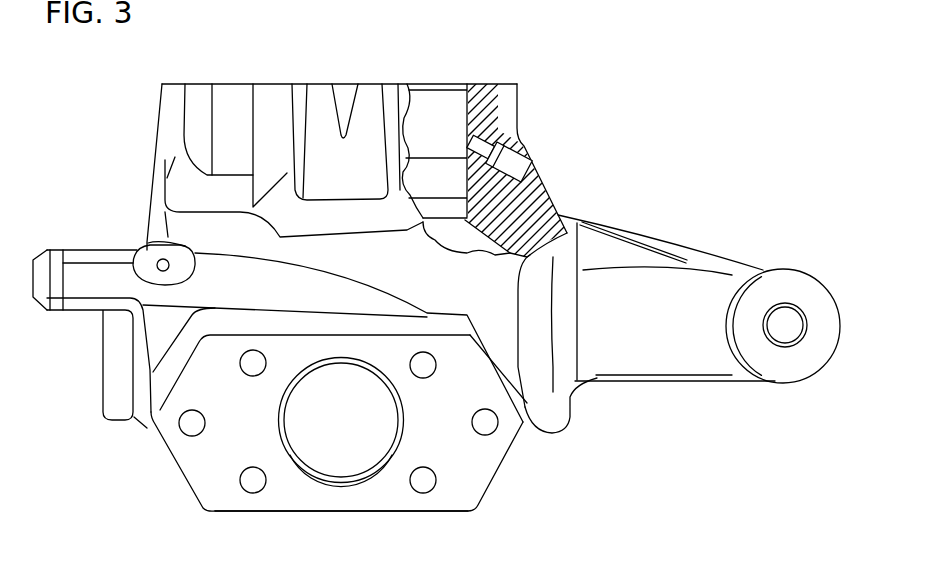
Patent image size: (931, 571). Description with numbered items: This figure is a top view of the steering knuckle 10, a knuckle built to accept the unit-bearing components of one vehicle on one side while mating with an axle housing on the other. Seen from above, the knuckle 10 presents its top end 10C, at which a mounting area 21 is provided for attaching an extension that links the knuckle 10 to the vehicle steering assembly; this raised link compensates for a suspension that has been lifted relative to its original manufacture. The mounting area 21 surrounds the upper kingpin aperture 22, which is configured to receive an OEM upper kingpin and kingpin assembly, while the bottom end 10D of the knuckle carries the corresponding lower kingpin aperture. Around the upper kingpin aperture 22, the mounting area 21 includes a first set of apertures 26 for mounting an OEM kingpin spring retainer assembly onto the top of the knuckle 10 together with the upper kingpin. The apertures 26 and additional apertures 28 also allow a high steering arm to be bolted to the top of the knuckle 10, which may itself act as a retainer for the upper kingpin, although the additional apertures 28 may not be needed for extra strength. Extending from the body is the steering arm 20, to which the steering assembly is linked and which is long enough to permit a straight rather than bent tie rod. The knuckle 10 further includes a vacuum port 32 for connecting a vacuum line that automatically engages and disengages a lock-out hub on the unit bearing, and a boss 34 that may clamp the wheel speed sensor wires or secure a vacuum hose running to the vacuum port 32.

The steering knuckle 10 is at (650, 124).
The top end 10C is at (215, 513).
The bottom end 10D is at (243, 83).
The steering arm 20 is at (730, 268).
The mounting area 21 is at (473, 470).
The upper kingpin aperture 22 is at (342, 452).
The first set of apertures 26 is at (258, 361).
The additional apertures 28 is at (190, 425).
The vacuum port 32 is at (518, 179).
The boss 34 is at (147, 263).